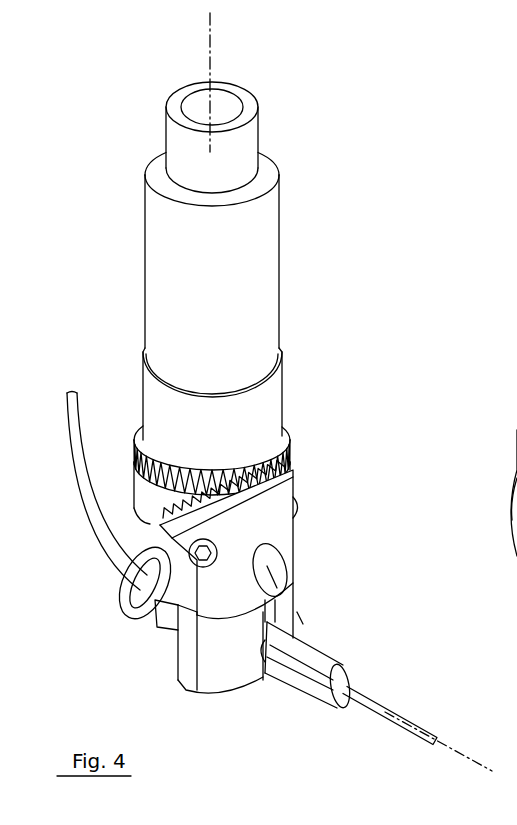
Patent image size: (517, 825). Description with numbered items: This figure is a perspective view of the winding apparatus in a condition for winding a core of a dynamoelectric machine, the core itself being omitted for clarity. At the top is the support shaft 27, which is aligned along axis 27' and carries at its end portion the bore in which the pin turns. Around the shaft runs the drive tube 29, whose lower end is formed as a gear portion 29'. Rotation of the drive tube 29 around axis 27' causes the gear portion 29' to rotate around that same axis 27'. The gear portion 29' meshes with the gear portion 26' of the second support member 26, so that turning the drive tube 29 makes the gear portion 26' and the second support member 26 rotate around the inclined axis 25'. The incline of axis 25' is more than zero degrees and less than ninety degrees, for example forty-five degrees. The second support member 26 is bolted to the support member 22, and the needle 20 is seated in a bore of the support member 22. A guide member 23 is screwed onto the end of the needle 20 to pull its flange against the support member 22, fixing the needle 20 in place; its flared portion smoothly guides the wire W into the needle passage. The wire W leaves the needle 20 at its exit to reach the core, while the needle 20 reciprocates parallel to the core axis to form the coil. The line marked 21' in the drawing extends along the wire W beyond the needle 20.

The axis 27' is at (256, 82).
The support shaft 27 is at (247, 137).
The drive tube 29 is at (247, 297).
The gear portion 29' is at (186, 423).
The gear portion 26' is at (272, 463).
The second support member 26 is at (276, 555).
The axis 25' is at (349, 588).
The guide member 23 is at (145, 603).
The support member 22 is at (215, 678).
The needle 20 is at (300, 687).
The wire W is at (373, 705).
The wire axis 21' is at (442, 722).